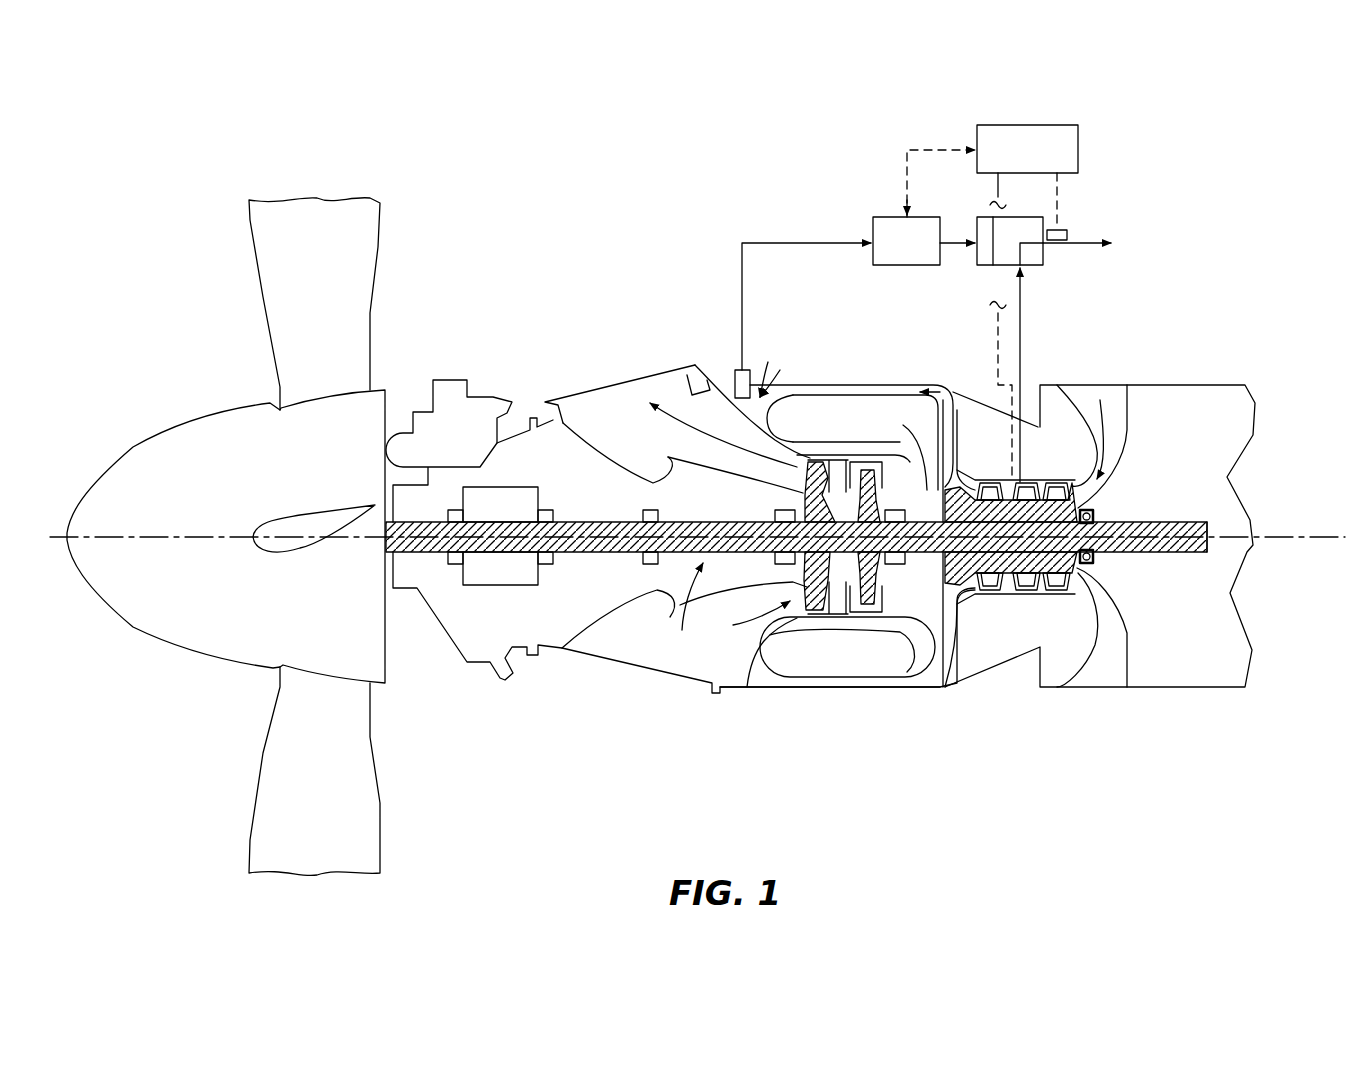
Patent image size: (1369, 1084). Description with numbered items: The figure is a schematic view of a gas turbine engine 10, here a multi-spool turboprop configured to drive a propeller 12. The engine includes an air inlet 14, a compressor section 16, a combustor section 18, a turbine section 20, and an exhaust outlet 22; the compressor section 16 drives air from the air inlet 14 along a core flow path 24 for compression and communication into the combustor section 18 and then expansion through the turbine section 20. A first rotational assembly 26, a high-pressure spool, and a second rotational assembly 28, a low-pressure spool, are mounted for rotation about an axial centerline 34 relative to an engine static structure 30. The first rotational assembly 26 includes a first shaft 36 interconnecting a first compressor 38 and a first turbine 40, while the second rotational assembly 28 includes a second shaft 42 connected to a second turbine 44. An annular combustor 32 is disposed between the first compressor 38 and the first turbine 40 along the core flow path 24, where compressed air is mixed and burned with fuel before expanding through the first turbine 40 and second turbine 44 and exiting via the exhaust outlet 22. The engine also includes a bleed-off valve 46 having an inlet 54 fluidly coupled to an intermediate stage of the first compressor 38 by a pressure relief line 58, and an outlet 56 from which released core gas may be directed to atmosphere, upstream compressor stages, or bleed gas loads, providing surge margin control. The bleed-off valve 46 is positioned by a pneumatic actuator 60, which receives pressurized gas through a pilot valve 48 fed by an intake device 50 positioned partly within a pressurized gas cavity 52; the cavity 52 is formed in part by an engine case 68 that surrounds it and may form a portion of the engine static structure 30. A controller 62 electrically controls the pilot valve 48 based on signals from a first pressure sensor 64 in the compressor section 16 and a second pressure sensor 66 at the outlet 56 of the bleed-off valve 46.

The gas turbine engine 10 is at (697, 483).
The propeller 12 is at (230, 393).
The air inlet 14 is at (1110, 370).
The compressor section 16 is at (995, 610).
The combustor section 18 is at (842, 688).
The turbine section 20 is at (748, 621).
The exhaust outlet 22 is at (608, 364).
The core flow path 24 is at (723, 448).
The first rotational assembly 26 is at (1133, 563).
The second rotational assembly 28 is at (685, 611).
The engine static structure 30 is at (1333, 547).
The annular combustor 32 is at (838, 381).
The axial centerline 34 is at (924, 568).
The first shaft 36 is at (1046, 480).
The first compressor 38 is at (867, 562).
The first turbine 40 is at (826, 570).
The second shaft 42 is at (584, 553).
The second turbine 44 is at (855, 415).
The bleed-off valve 46 is at (1062, 216).
The pilot valve 48 is at (924, 241).
The intake device 50 is at (737, 372).
The pressurized gas cavity 52 is at (772, 354).
The inlet 54 is at (1015, 266).
The outlet 56 is at (1045, 245).
The pressure relief line 58 is at (1020, 321).
The pneumatic actuator 60 is at (985, 258).
The controller 62 is at (992, 171).
The first pressure sensor 64 is at (1010, 477).
The second pressure sensor 66 is at (1067, 235).
The engine case 68 is at (799, 392).